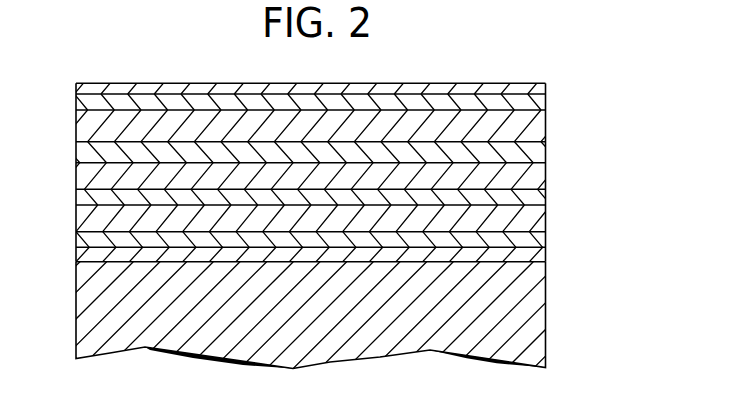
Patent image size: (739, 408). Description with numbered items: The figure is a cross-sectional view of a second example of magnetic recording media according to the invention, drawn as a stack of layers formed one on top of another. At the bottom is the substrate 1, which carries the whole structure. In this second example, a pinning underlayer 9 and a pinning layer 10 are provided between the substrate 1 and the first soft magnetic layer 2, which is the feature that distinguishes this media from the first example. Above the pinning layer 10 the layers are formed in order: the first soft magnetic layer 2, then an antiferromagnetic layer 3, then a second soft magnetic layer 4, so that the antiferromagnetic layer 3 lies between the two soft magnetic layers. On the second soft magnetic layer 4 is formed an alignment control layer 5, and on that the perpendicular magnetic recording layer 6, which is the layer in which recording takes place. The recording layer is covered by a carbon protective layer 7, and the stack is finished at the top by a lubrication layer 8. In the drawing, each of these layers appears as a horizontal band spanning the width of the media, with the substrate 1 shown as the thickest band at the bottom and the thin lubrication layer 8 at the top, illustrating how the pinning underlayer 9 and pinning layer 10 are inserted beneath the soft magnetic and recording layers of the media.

The substrate 1 is at (546, 317).
The first soft magnetic layer 2 is at (546, 220).
The antiferromagnetic layer 3 is at (546, 197).
The second soft magnetic layer 4 is at (546, 178).
The alignment control layer 5 is at (546, 150).
The perpendicular magnetic recording layer 6 is at (546, 132).
The carbon protective layer 7 is at (546, 102).
The lubrication layer 8 is at (546, 86).
The pinning underlayer 9 is at (546, 255).
The pinning layer 10 is at (546, 240).